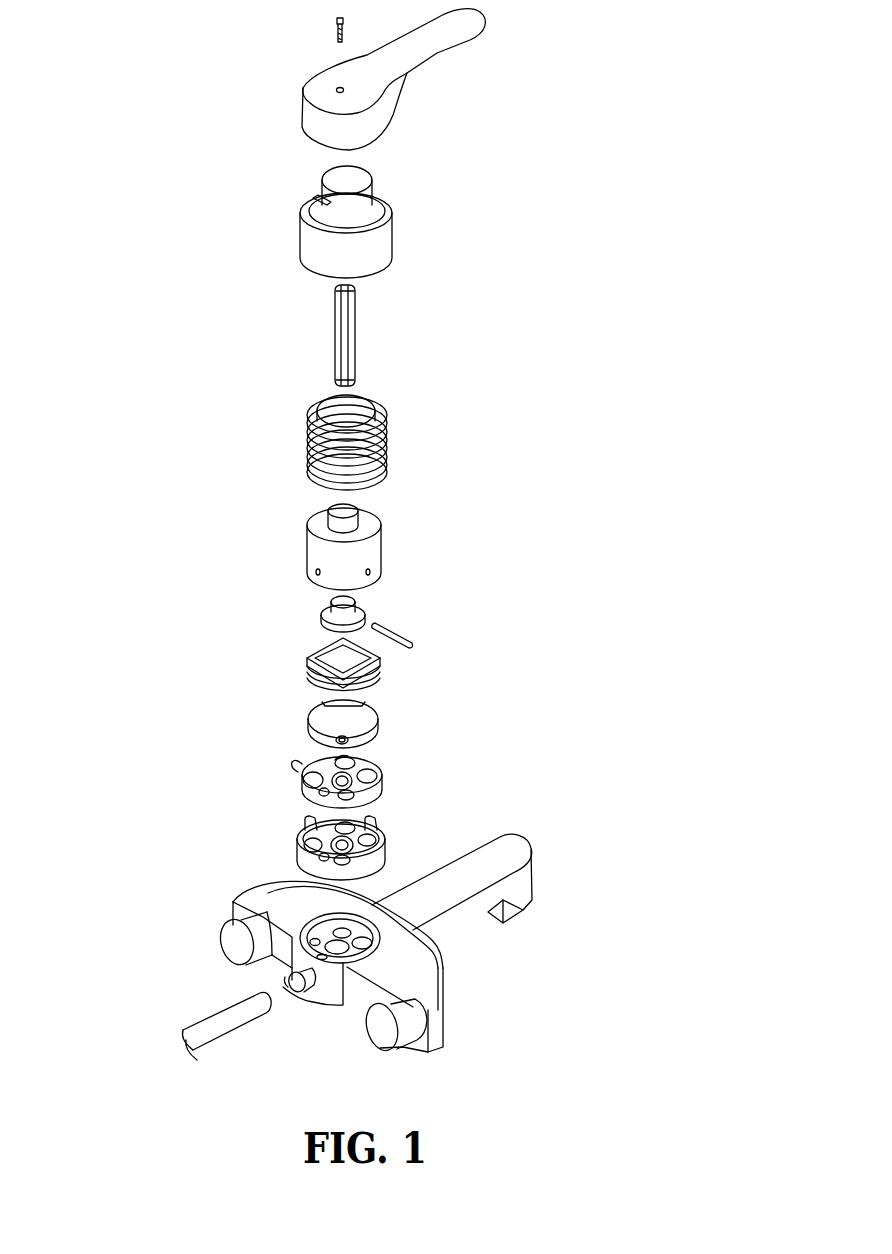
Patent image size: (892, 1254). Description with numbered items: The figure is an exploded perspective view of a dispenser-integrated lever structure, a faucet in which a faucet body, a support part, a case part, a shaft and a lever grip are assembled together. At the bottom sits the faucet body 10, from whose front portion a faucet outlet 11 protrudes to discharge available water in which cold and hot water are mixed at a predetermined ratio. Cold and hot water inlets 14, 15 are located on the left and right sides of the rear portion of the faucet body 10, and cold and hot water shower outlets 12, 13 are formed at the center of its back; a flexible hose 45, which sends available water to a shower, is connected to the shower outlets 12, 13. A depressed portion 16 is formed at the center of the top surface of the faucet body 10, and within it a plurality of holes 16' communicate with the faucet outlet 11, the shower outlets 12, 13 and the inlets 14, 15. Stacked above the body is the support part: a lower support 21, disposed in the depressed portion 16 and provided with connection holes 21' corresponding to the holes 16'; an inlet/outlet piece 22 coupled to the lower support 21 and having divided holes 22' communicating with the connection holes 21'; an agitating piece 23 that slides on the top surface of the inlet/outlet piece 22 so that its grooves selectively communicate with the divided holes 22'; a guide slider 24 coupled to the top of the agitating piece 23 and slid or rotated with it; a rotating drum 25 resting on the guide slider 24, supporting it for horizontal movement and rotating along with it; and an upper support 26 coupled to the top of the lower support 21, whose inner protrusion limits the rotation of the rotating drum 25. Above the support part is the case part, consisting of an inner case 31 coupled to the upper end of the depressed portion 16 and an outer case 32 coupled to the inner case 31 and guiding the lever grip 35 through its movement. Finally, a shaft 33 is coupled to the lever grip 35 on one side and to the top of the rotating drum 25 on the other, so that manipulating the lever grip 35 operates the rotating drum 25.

The faucet body 10 is at (497, 940).
The faucet outlet 11 is at (523, 910).
The cold and hot water shower outlet 12 is at (300, 1000).
The cold and hot water shower outlet 13 is at (285, 987).
The cold and hot water inlet 14 is at (370, 1033).
The cold and hot water inlet 15 is at (226, 945).
The depressed portion 16 is at (302, 903).
The holes 16' is at (411, 951).
The lower support 21 is at (366, 850).
The connection holes 21' is at (317, 814).
The inlet/outlet piece 22 is at (359, 785).
The divided holes 22' is at (305, 755).
The agitating piece 23 is at (370, 718).
The guide slider 24 is at (380, 672).
The rotating drum 25 is at (367, 608).
The upper support 26 is at (382, 550).
The inner case 31 is at (387, 448).
The outer case 32 is at (382, 250).
The shaft 33 is at (334, 328).
The lever grip 35 is at (423, 57).
The flexible hose 45 is at (225, 1015).